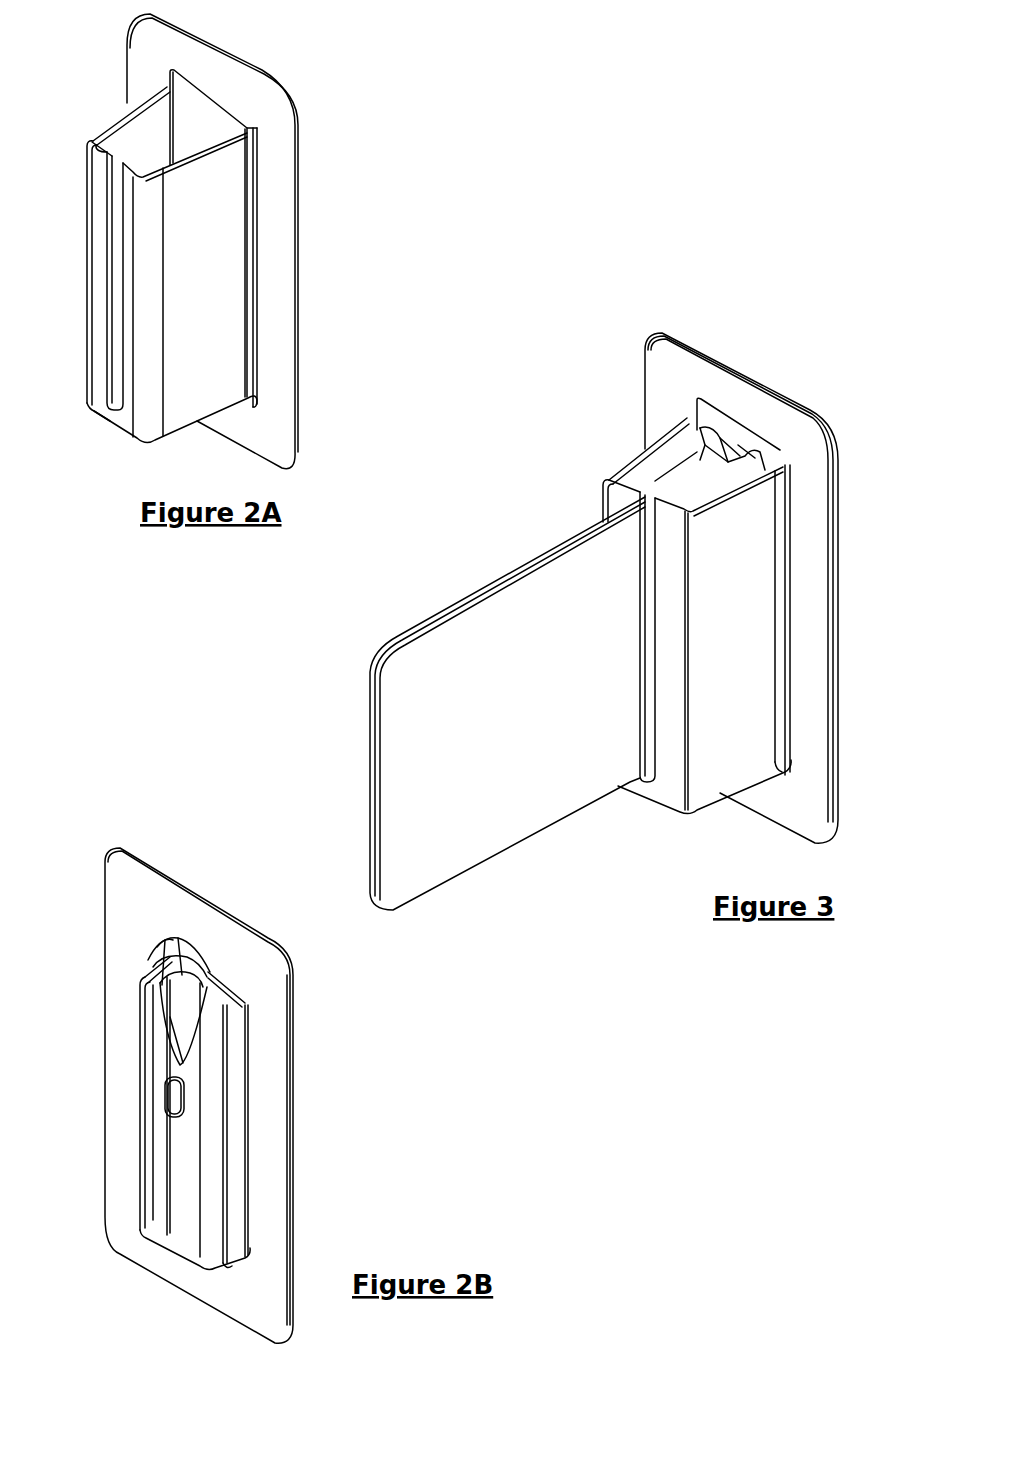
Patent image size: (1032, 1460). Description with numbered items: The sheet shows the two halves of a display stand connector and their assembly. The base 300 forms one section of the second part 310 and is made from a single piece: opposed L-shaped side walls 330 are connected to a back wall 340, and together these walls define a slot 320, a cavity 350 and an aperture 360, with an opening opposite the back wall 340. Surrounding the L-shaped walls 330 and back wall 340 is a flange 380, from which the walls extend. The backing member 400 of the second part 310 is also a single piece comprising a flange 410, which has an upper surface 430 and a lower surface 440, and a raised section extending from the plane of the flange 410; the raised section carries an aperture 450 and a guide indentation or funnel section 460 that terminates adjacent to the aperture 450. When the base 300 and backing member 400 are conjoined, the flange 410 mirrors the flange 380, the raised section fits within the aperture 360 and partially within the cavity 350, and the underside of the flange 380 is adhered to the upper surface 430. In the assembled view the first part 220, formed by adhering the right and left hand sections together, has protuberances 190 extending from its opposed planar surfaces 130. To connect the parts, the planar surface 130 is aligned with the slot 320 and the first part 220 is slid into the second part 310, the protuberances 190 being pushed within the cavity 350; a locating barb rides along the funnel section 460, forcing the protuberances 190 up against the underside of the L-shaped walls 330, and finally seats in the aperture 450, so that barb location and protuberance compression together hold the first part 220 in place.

In FIG. 3, the planar surface 130 is at (492, 655).
In FIG. 3, the protuberance 190 is at (668, 508).
In FIG. 3, the first part 220 is at (537, 617).
In FIG. 2A, the base 300 is at (270, 142).
In FIG. 3, the base 300 is at (800, 570).
In FIG. 3, the second part 310 is at (607, 357).
In FIG. 2A, the slot 320 is at (115, 230).
In FIG. 3, the slot 320 is at (643, 737).
In FIG. 2A, the L-shaped side walls 330 is at (92, 142).
In FIG. 2A, the back wall 340 is at (110, 420).
In FIG. 2A, the cavity 350 is at (118, 118).
In FIG. 3, the cavity 350 is at (663, 460).
In FIG. 2A, the aperture 360 is at (202, 125).
In FIG. 2A, the flange 380 is at (280, 245).
In FIG. 3, the backing member 400 is at (838, 444).
In FIG. 2B, the backing member 400 is at (320, 1070).
In FIG. 2B, the flange 410 is at (147, 887).
In FIG. 2B, the upper surface 430 is at (260, 1287).
In FIG. 2B, the lower surface 440 is at (294, 1118).
In FIG. 2B, the aperture 450 is at (182, 1103).
In FIG. 2B, the funnel section 460 is at (187, 997).